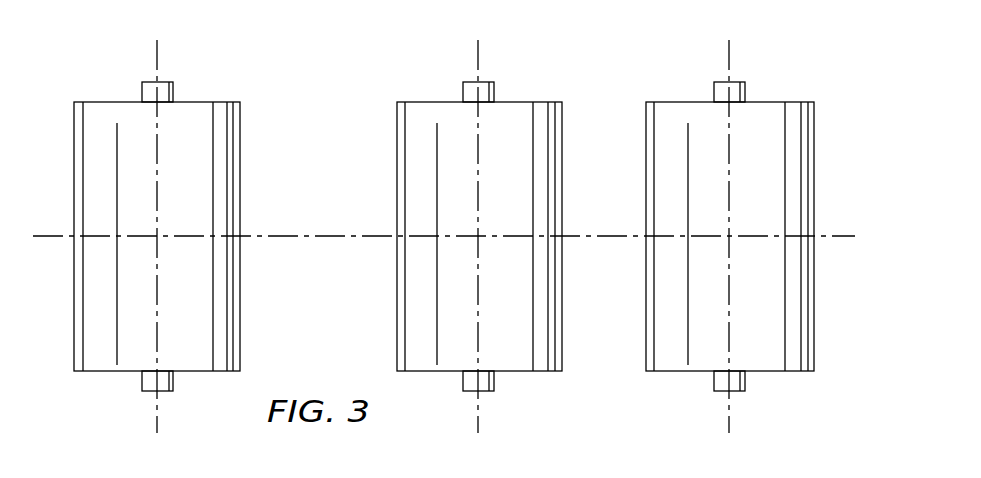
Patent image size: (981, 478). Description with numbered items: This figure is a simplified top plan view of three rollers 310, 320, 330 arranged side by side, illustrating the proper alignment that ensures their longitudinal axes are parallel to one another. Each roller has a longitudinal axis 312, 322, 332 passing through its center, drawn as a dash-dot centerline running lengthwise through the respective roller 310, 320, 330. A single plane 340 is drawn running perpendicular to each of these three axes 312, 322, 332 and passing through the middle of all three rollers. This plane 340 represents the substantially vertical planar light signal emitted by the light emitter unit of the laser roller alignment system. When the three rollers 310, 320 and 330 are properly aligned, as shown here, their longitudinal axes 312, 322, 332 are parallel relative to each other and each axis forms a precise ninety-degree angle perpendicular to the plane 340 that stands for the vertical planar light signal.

The roller 310 is at (96, 101).
The longitudinal axis 312 is at (158, 48).
The roller 320 is at (418, 101).
The longitudinal axis 322 is at (480, 48).
The roller 330 is at (667, 101).
The longitudinal axis 332 is at (731, 48).
The single plane 340 is at (53, 235).